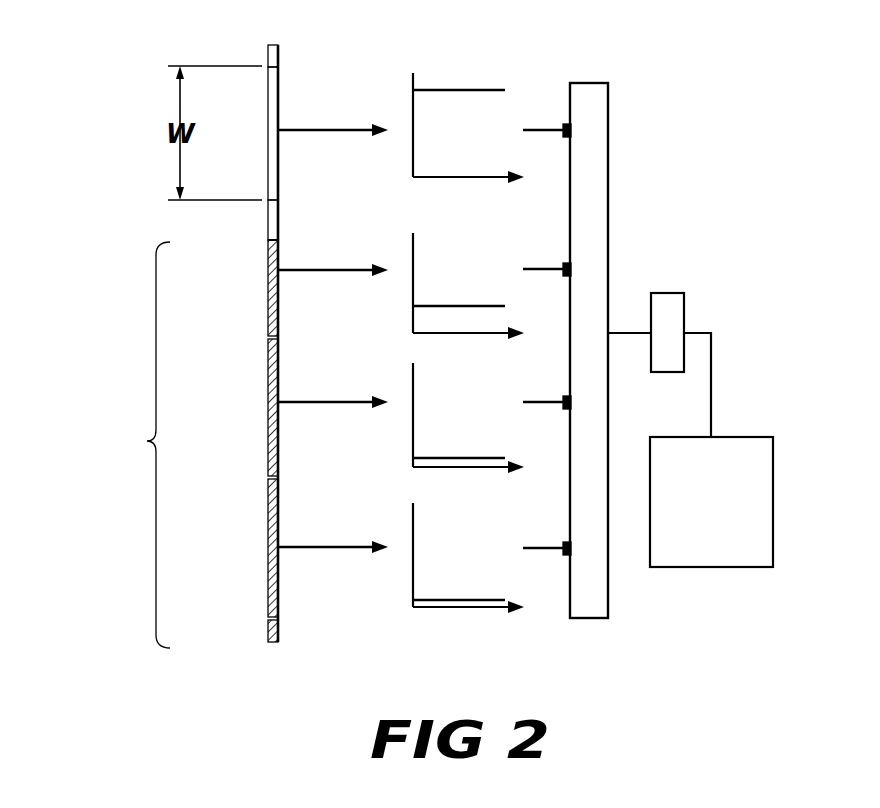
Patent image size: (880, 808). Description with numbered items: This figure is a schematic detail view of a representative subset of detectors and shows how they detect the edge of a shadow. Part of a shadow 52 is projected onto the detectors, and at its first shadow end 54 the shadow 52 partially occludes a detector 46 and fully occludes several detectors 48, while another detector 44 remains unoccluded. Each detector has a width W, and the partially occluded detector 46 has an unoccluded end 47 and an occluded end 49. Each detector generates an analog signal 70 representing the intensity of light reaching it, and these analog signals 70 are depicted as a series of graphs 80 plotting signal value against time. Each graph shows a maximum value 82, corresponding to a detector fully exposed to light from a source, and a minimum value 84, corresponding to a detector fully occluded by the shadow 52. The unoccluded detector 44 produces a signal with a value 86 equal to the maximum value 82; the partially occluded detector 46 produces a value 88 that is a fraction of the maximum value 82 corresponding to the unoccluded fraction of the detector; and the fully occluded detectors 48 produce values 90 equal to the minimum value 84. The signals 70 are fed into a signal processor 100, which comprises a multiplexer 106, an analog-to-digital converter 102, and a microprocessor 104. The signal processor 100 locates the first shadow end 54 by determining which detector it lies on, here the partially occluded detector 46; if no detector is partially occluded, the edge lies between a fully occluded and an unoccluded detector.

The unoccluded detector 44 is at (268, 119).
The partially occluded detector 46 is at (268, 252).
The unoccluded end 47 is at (318, 180).
The fully occluded detector 48 is at (268, 408).
The occluded end 49 is at (268, 337).
The shadow 52 is at (193, 444).
The first shadow end 54 is at (268, 240).
The analog signal 70 is at (344, 128).
The graphs 80 is at (447, 364).
The maximum value 82 is at (389, 62).
The minimum value 84 is at (393, 168).
The value of unoccluded detector signal 86 is at (450, 90).
The value of partially occluded detector signal 88 is at (445, 306).
The value of fully occluded detector signal 90 is at (436, 458).
The signal processor 100 is at (671, 318).
The analog-to-digital converter 102 is at (668, 294).
The microprocessor 104 is at (734, 515).
The multiplexer 106 is at (608, 218).